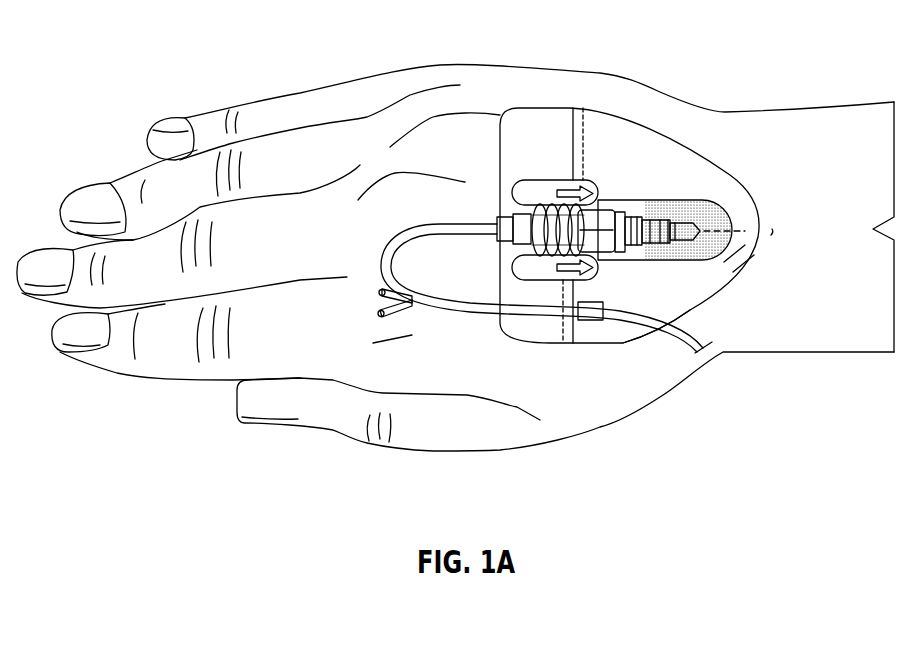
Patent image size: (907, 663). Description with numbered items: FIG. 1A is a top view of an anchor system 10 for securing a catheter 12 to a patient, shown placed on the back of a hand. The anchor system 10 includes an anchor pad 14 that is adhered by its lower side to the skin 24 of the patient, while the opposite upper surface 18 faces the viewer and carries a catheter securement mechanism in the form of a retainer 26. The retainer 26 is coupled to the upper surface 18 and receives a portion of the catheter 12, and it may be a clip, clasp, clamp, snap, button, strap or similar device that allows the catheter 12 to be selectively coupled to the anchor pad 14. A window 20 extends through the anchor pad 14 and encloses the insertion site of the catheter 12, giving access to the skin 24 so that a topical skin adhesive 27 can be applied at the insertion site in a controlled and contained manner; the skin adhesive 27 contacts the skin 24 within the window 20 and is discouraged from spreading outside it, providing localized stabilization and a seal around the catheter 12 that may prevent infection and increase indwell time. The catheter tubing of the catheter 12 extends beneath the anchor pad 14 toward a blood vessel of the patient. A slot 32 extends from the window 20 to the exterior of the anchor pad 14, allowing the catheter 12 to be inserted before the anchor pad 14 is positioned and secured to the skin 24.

The anchor system 10 is at (702, 128).
The catheter 12 is at (677, 220).
The anchor pad 14 is at (715, 187).
The upper surface 18 is at (725, 283).
The window 20 is at (637, 200).
The skin 24 is at (480, 166).
The retainer 26 is at (538, 193).
The topical skin adhesive 27 is at (727, 250).
The slot 32 is at (728, 265).